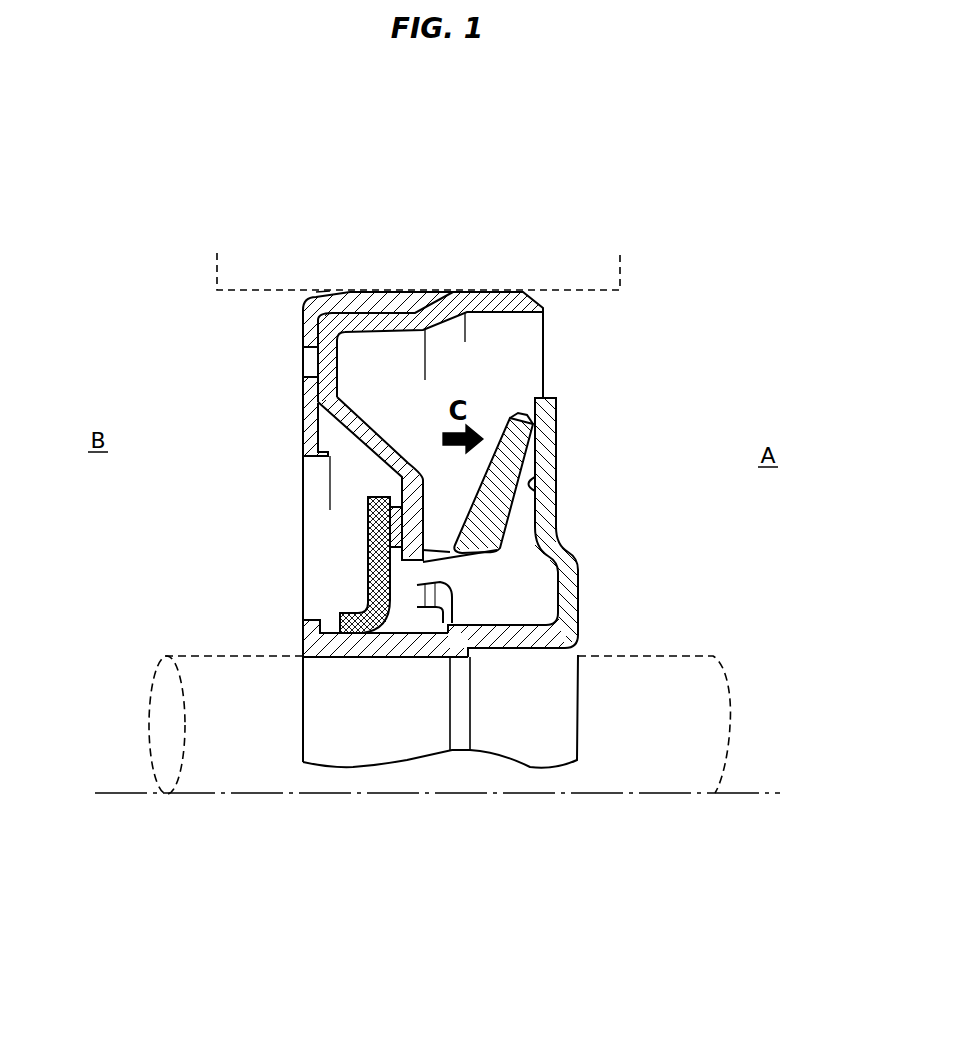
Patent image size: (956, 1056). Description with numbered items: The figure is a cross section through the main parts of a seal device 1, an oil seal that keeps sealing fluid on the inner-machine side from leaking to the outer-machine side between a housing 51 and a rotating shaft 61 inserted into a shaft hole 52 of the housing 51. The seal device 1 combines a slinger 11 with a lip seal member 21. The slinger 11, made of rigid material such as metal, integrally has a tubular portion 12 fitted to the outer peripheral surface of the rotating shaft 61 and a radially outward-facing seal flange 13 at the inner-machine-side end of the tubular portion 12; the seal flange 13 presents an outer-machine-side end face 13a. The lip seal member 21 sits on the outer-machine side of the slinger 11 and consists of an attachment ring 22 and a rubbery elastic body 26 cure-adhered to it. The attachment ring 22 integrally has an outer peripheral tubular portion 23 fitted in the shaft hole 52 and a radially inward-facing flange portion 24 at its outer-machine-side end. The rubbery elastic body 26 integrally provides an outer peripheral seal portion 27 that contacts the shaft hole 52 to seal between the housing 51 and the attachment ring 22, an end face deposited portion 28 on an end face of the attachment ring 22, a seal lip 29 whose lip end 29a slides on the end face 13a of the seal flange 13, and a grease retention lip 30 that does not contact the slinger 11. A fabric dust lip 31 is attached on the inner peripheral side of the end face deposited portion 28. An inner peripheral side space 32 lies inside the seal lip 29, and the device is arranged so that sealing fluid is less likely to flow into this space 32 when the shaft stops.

The seal device 1 is at (315, 304).
The slinger 11 is at (578, 600).
The tubular portion 12 is at (362, 640).
The seal flange 13 is at (555, 400).
The outer-machine-side end face 13a is at (536, 485).
The lip seal member 21 is at (304, 340).
The attachment ring 22 is at (327, 372).
The outer peripheral tubular portion 23 is at (473, 292).
The flange portion 24 is at (405, 520).
The rubbery elastic body 26 is at (360, 459).
The outer peripheral seal portion 27 is at (369, 302).
The end face deposited portion 28 is at (312, 420).
The seal lip 29 is at (505, 523).
The lip end 29a is at (532, 430).
The grease retention lip 30 is at (440, 632).
The dust lip 31 is at (362, 579).
The inner peripheral side space 32 is at (520, 565).
The housing 51 is at (572, 262).
The shaft hole 52 is at (607, 317).
The rotating shaft 61 is at (635, 777).